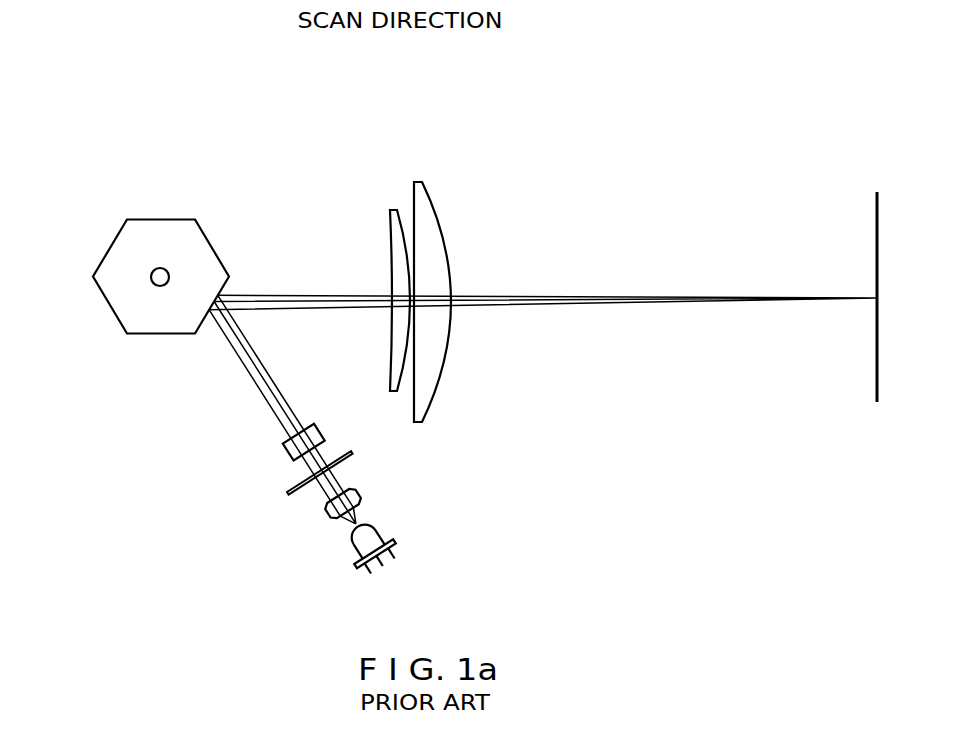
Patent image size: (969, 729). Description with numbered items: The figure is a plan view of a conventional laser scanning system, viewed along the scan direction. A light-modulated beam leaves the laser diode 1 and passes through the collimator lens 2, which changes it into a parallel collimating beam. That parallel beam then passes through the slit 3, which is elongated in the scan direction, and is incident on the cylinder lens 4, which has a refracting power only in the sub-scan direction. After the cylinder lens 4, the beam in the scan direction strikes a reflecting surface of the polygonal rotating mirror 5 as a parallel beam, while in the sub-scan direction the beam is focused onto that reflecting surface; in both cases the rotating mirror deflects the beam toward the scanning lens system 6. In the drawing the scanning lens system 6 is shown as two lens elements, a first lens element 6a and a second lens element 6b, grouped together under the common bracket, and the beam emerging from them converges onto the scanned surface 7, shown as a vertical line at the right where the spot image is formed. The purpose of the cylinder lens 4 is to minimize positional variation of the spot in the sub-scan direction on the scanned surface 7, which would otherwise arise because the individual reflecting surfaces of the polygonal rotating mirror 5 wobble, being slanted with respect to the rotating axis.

The laser diode 1 is at (356, 549).
The collimator lens 2 is at (325, 510).
The slit 3 is at (293, 482).
The cylinder lens 4 is at (285, 450).
The polygonal rotating mirror 5 is at (125, 262).
The scanning lens system 6 is at (424, 263).
The first scanning lens 6a is at (393, 243).
The second scanning lens 6b is at (443, 235).
The scanned surface 7 is at (876, 230).